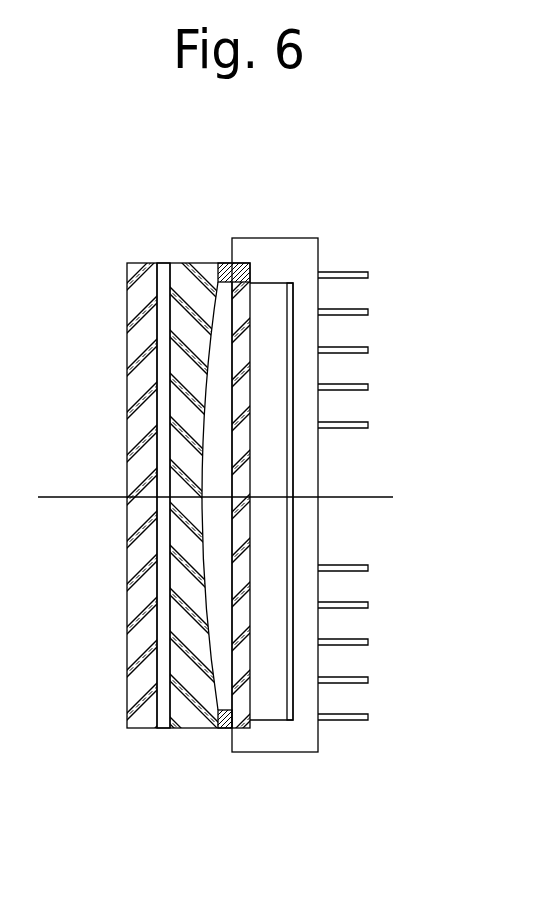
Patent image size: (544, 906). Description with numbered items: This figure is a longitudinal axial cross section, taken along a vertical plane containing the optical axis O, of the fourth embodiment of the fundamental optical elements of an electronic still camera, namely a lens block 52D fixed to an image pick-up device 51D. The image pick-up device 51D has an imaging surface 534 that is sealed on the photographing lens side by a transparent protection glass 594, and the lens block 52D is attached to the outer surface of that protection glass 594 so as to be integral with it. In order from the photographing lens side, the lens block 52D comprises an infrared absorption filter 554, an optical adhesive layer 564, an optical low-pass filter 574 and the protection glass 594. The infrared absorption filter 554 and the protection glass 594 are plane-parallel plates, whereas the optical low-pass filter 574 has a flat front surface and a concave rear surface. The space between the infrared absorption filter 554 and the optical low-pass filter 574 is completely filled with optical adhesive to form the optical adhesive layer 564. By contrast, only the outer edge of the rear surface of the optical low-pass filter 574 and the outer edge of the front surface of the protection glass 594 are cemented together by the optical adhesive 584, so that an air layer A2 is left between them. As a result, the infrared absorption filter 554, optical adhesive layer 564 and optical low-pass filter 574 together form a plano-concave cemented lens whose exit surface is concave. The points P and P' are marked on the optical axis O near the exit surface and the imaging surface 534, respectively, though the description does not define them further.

The lens block 52D is at (159, 472).
The image pick-up device 51D is at (327, 456).
The infrared absorption filter 554 is at (135, 263).
The optical adhesive layer 564 is at (165, 713).
The optical low-pass filter 574 is at (200, 263).
The protection glass 594 is at (242, 263).
The optical adhesive 584 is at (223, 728).
The imaging surface 534 is at (290, 552).
The air layer A2 is at (213, 465).
The exit point on optical axis P is at (342, 425).
The image point P' is at (369, 467).
The optical axis O is at (231, 497).